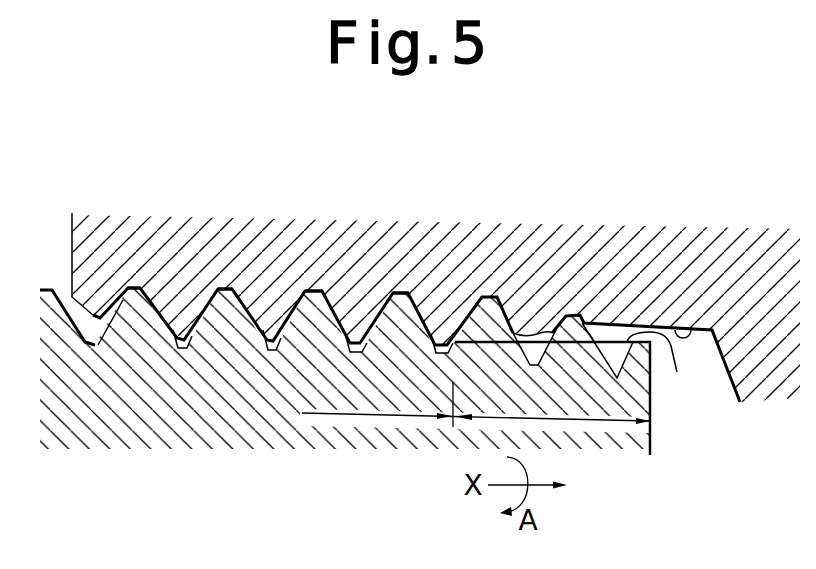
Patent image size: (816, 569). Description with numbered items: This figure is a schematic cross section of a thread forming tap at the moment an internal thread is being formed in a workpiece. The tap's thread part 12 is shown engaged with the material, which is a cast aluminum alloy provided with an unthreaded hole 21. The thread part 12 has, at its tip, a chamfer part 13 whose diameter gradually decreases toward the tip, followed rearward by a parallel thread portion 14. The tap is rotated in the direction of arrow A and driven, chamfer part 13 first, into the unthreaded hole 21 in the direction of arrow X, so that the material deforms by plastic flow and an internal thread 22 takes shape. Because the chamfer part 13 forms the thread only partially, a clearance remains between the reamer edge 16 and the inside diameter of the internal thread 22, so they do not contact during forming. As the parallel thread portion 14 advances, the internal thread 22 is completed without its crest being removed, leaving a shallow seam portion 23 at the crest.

The thread part 12 is at (211, 363).
The chamfer part 13 is at (551, 398).
The parallel thread portion 14 is at (377, 404).
The reamer edge 16 is at (661, 368).
The unthreaded hole 21 is at (693, 328).
The internal thread 22 is at (177, 317).
The seam portion 23 is at (267, 351).